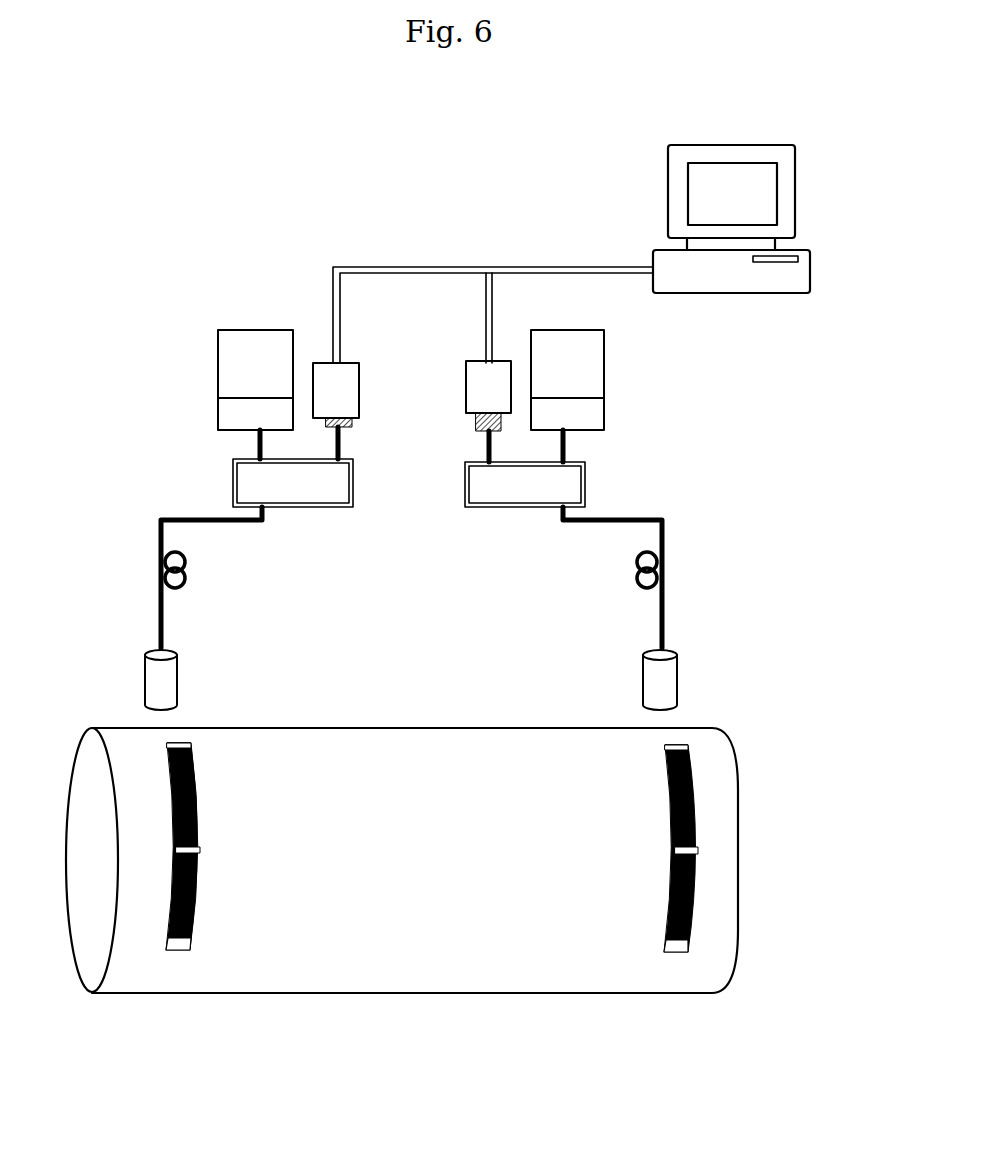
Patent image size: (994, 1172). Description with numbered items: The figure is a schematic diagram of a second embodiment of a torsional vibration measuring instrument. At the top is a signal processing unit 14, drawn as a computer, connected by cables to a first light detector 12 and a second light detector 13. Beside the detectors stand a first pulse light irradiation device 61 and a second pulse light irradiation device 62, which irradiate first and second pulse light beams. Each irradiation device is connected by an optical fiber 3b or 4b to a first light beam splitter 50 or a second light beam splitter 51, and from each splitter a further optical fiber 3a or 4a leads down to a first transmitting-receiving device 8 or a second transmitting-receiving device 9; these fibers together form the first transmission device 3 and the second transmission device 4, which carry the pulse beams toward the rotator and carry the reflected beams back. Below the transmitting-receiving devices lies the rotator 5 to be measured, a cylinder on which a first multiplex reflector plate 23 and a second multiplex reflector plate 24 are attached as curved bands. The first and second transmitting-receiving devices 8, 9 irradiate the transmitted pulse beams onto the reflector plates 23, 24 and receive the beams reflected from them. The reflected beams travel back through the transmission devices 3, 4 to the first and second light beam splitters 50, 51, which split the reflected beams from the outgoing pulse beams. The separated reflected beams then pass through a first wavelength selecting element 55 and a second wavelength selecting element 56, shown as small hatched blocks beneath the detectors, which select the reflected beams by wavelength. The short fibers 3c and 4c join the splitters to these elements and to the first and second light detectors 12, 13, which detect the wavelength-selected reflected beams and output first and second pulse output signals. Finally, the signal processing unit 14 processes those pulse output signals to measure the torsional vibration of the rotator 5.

The signal processing unit 14 is at (797, 190).
The first pulse light irradiation device 61 is at (218, 356).
The second pulse light irradiation device 62 is at (604, 357).
The first light detector 12 is at (327, 363).
The second light detector 13 is at (495, 361).
The first wavelength selecting element 55 is at (355, 425).
The second wavelength selecting element 56 is at (476, 422).
The first light beam splitter 50 is at (233, 476).
The second light beam splitter 51 is at (585, 482).
The first transmission device 3 is at (112, 604).
The optical fiber 3a is at (157, 533).
The optical fiber 3b is at (255, 443).
The first measurement cable 3c is at (343, 443).
The second transmission device 4 is at (699, 586).
The optical fiber 4a is at (667, 538).
The optical fiber 4b is at (568, 443).
The second measurement cable 4c is at (485, 450).
The first transmitting-receiving device 8 is at (143, 681).
The second transmitting-receiving device 9 is at (680, 678).
The first multiplex reflector plate 23 is at (195, 775).
The second multiplex reflector plate 24 is at (693, 790).
The rotator 5 is at (727, 937).